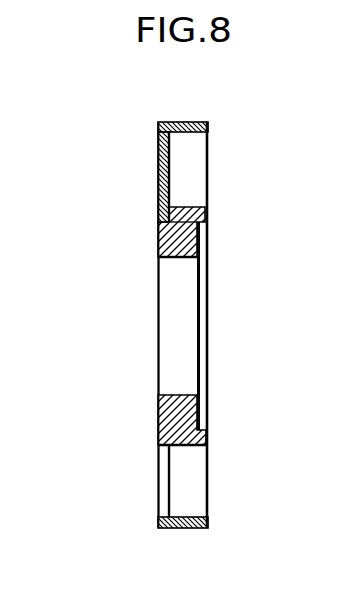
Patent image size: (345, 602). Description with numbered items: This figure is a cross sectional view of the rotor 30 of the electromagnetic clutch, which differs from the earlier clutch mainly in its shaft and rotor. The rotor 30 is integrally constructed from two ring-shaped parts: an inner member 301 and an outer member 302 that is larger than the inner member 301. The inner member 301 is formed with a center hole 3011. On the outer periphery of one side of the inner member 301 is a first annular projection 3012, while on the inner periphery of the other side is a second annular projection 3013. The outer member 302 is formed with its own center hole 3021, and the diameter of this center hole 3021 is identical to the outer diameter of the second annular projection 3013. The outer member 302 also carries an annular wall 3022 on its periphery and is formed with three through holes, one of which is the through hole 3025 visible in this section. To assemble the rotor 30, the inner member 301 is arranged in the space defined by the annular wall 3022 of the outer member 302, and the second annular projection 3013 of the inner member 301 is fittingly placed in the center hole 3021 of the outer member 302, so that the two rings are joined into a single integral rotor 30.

The rotor 30 is at (172, 332).
The inner member 301 is at (214, 238).
The outer member 302 is at (122, 232).
The center hole 3011 is at (168, 396).
The first annular projection 3012 is at (201, 415).
The second annular projection 3013 is at (160, 438).
The center hole 3021 is at (158, 239).
The annular wall 3022 is at (178, 528).
The through hole 3025 is at (164, 516).